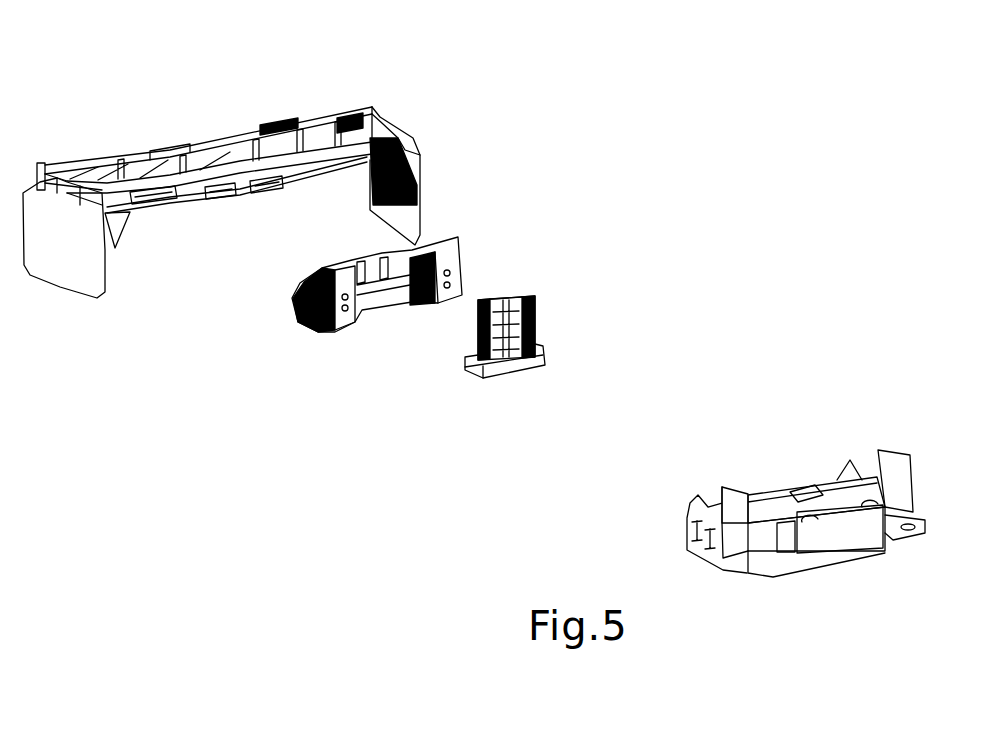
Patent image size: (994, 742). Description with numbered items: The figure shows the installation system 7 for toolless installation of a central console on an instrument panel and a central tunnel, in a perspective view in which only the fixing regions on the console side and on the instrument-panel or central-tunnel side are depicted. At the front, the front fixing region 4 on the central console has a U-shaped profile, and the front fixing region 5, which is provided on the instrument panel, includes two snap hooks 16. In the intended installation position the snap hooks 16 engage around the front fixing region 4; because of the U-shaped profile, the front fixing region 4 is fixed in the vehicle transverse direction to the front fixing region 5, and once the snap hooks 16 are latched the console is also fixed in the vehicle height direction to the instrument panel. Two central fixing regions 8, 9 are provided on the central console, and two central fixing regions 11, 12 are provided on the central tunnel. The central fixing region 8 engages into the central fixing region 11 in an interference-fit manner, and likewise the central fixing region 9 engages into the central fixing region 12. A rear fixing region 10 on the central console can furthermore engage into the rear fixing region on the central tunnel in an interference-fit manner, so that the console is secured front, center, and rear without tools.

The front fixing region 4 is at (386, 110).
The front fixing region 5 is at (196, 118).
The installation system 7 is at (820, 207).
The central fixing region 8 is at (460, 240).
The central fixing region 9 is at (530, 296).
The rear fixing region 10 is at (810, 480).
The central fixing region 11 is at (355, 328).
The central fixing region 12 is at (514, 375).
The snap hooks 16 is at (277, 188).